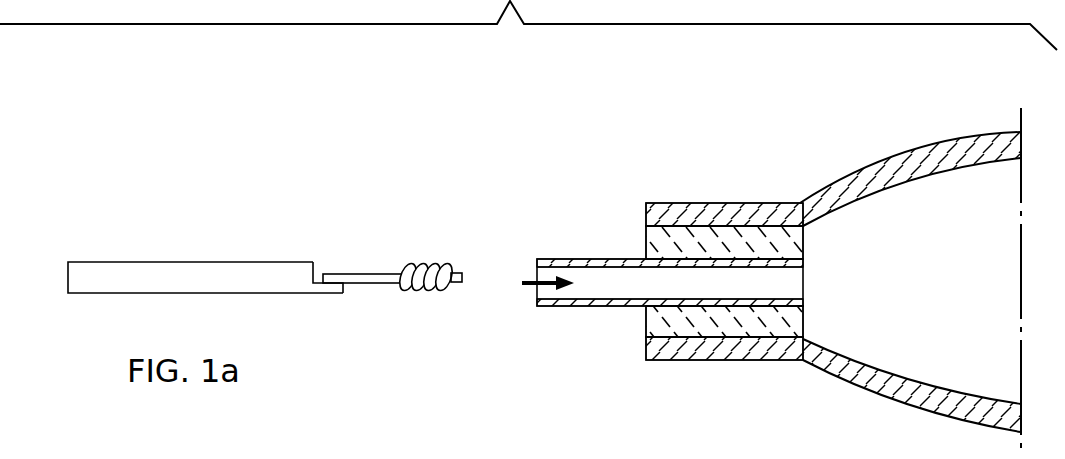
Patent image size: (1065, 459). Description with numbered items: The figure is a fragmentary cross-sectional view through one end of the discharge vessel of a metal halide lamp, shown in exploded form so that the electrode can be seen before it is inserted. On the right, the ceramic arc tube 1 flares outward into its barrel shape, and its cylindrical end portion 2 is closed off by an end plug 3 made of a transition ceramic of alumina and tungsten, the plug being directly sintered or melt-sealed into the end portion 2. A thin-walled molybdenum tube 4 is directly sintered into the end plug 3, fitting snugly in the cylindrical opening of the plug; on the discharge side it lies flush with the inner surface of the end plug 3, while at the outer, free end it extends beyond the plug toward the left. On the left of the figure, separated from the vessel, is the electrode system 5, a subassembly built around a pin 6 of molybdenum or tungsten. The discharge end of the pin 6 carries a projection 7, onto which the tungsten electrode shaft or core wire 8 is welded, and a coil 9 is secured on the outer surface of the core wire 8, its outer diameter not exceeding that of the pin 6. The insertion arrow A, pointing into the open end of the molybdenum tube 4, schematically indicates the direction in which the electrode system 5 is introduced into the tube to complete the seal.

The arc tube 1 is at (886, 136).
The end portion 2 is at (748, 220).
The end plug 3 is at (690, 245).
The molybdenum tube 4 is at (568, 259).
The electrode system 5 is at (266, 240).
The pin 6 is at (138, 262).
The projection 7 is at (335, 293).
The core wire 8 is at (378, 274).
The coil 9 is at (435, 244).
The insertion arrow A is at (527, 287).